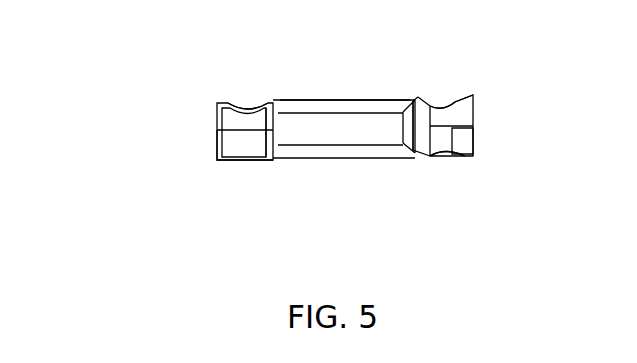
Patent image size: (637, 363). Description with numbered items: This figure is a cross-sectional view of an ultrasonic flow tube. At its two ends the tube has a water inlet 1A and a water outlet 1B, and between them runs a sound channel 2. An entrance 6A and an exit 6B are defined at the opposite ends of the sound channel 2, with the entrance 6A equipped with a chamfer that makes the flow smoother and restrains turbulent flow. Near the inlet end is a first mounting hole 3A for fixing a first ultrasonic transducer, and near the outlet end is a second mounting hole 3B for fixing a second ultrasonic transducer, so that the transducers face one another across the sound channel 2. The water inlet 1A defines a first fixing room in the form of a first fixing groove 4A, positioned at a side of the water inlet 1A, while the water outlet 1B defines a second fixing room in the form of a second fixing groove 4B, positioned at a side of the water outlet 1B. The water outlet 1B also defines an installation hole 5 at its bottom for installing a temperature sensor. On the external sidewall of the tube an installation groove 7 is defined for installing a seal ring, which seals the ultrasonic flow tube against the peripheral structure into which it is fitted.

The sound channel 2 is at (318, 130).
The installation groove 7 is at (343, 100).
The first mounting hole 3A is at (250, 108).
The second mounting hole 3B is at (440, 102).
The water inlet 1A is at (217, 118).
The water outlet 1B is at (472, 108).
The first fixing groove 4A is at (217, 135).
The second fixing groove 4B is at (473, 131).
The installation hole 5 is at (446, 153).
The entrance 6A is at (265, 146).
The exit 6B is at (408, 122).